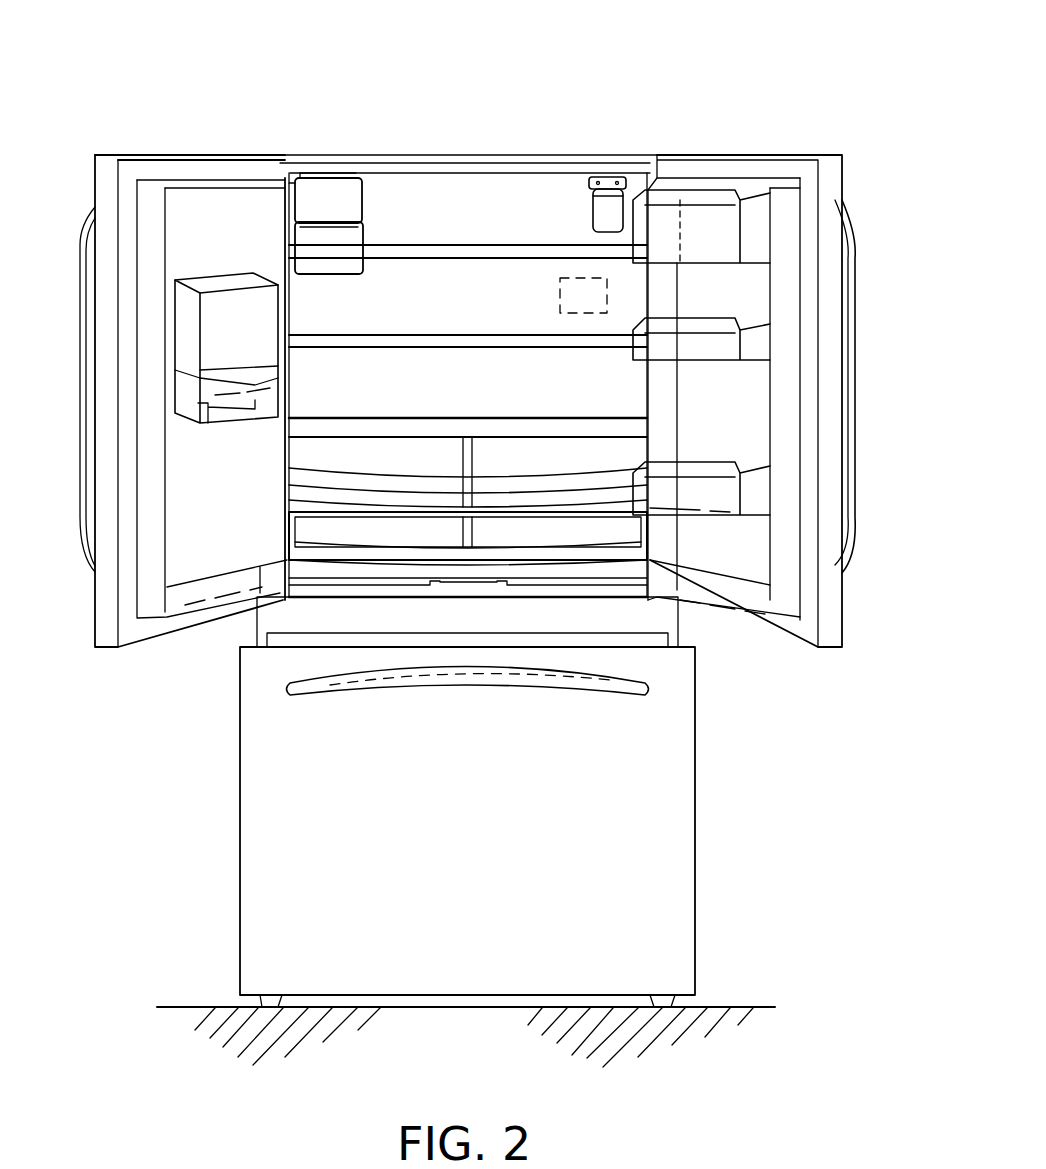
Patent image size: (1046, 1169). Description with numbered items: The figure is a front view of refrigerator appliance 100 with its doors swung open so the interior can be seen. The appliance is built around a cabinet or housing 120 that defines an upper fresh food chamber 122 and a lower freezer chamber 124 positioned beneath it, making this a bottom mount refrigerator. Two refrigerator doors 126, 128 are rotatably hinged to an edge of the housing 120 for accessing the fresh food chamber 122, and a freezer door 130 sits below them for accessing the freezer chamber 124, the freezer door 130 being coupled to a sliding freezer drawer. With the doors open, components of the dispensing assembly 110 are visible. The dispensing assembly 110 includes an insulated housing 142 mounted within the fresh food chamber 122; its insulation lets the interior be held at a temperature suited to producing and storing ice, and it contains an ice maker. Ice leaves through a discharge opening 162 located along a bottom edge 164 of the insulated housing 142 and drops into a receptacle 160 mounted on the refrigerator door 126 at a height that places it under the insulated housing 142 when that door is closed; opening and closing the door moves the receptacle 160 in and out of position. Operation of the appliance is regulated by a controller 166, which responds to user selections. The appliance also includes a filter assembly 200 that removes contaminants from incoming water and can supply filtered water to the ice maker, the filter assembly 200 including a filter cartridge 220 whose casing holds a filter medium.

The refrigerator appliance 100 is at (717, 90).
The dispensing assembly 110 is at (273, 228).
The housing 120 is at (240, 898).
The fresh food chamber 122 is at (443, 205).
The freezer chamber 124 is at (655, 767).
The refrigerator door 126 is at (147, 153).
The refrigerator door 128 is at (737, 153).
The freezer door 130 is at (655, 870).
The insulated housing 142 is at (330, 200).
The receptacle 160 is at (227, 307).
The discharge opening 162 is at (338, 277).
The bottom edge 164 is at (330, 278).
The controller 166 is at (557, 297).
The filter assembly 200 is at (582, 208).
The filter cartridge 220 is at (603, 195).